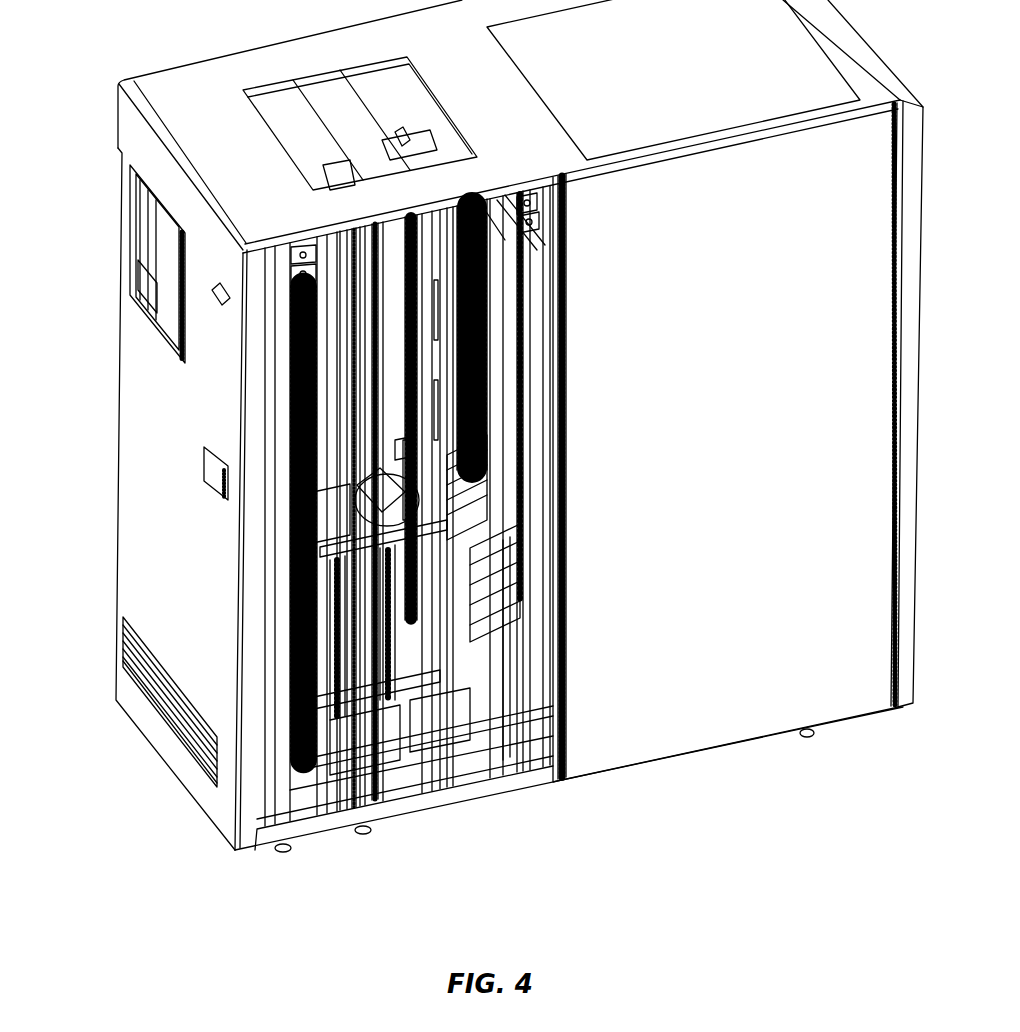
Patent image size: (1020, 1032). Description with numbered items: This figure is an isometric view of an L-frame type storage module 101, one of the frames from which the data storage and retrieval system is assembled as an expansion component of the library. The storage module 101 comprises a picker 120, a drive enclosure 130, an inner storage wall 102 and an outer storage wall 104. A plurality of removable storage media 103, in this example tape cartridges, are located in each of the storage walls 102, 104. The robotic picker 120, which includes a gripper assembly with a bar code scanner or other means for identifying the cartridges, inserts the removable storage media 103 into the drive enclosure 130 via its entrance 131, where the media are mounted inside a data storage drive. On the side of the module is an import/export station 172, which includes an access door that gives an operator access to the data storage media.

The storage module 101 is at (232, 82).
The import/export station 172 is at (170, 250).
The inner storage wall 102 is at (496, 324).
The removable storage media 103 is at (477, 389).
The picker 120 is at (393, 537).
The entrance 131 is at (458, 567).
The drive enclosure 130 is at (487, 597).
The outer storage wall 104 is at (297, 710).